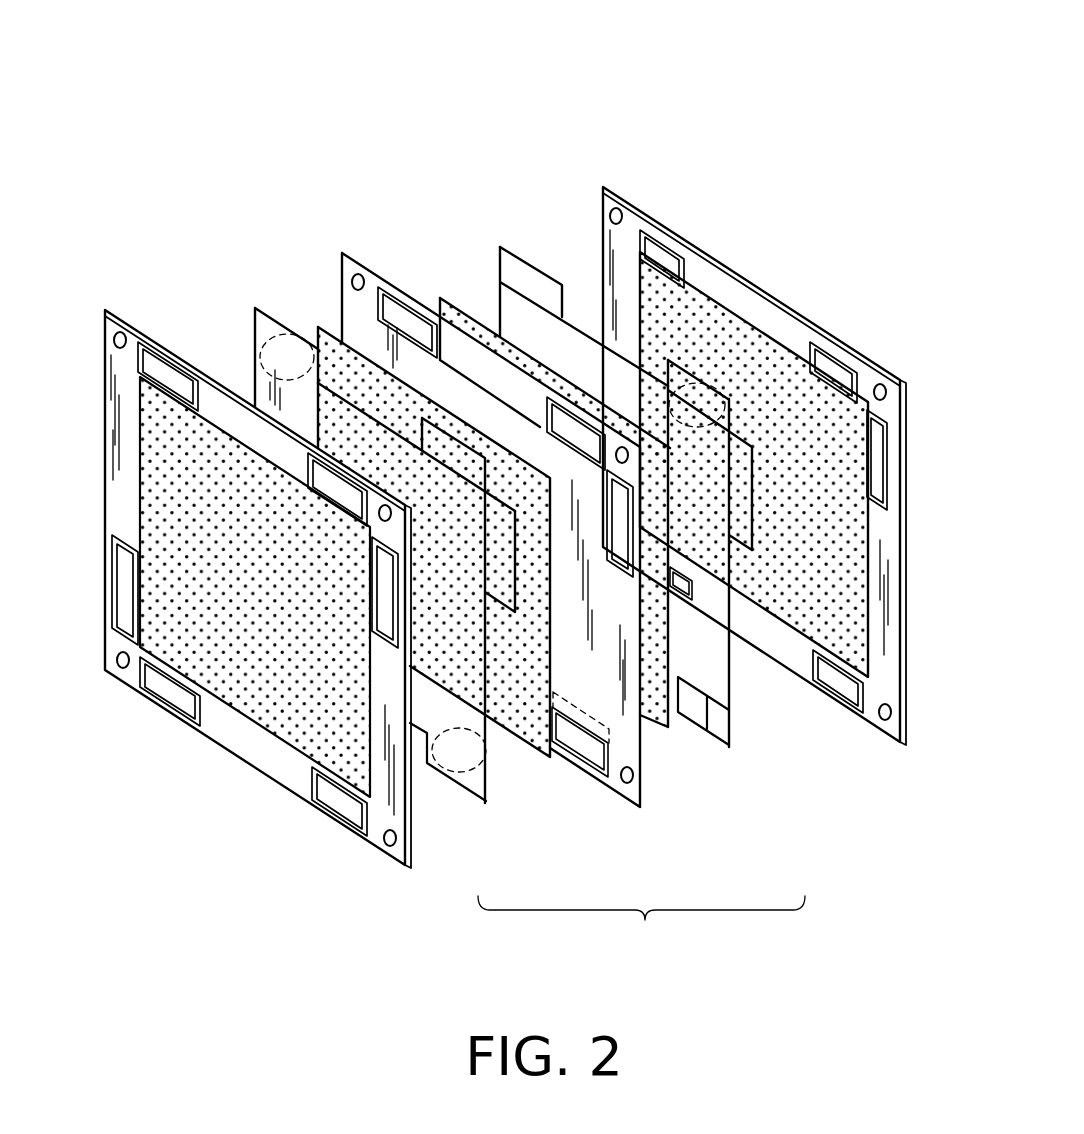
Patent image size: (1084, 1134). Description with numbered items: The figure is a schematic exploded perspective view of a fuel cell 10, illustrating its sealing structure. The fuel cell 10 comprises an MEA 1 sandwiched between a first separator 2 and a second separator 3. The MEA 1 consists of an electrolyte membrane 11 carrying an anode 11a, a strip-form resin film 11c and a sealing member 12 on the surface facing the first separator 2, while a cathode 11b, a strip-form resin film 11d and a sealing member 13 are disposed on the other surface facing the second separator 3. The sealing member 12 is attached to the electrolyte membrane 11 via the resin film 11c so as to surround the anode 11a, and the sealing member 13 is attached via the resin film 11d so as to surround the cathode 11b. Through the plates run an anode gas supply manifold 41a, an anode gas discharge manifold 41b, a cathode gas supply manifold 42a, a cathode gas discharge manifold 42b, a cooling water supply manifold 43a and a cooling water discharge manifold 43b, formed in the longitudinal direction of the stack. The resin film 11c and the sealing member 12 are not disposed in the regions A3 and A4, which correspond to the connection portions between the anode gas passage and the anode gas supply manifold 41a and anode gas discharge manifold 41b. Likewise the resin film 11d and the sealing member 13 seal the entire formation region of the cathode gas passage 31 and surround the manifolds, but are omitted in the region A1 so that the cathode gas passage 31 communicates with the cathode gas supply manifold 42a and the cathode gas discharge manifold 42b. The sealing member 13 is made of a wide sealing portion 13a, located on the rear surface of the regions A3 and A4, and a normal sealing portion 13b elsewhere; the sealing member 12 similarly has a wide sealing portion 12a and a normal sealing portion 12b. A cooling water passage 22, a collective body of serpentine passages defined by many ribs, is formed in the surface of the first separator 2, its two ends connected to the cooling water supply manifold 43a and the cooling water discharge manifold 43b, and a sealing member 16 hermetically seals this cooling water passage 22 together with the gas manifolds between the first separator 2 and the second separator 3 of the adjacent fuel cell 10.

The fuel cell 10 is at (697, 98).
The MEA 1 is at (641, 924).
The first separator 2 is at (398, 861).
The second separator 3 is at (901, 745).
The electrolyte membrane 11 is at (641, 807).
The anode 11a is at (548, 760).
The cathode 11b is at (690, 790).
The resin film 11c is at (450, 350).
The resin film 11d is at (612, 730).
The sealing member 12 is at (488, 802).
The wide sealing portion 12a is at (340, 320).
The normal sealing portion 12b is at (259, 332).
The sealing member 13 is at (746, 750).
The wide sealing portion 13a is at (504, 292).
The normal sealing portion 13b is at (725, 695).
The sealing member 16 is at (298, 757).
The cooling water passage 22 is at (248, 707).
The cathode gas passage 31 is at (809, 626).
The anode gas supply manifold 41a is at (338, 803).
The anode gas discharge manifold 41b is at (168, 362).
The cathode gas supply manifold 42a is at (332, 482).
The cathode gas discharge manifold 42b is at (168, 692).
The cooling water supply manifold 43a is at (123, 602).
The cooling water discharge manifold 43b is at (888, 457).
The region A1 is at (700, 383).
The region A3 is at (274, 333).
The region A4 is at (463, 773).